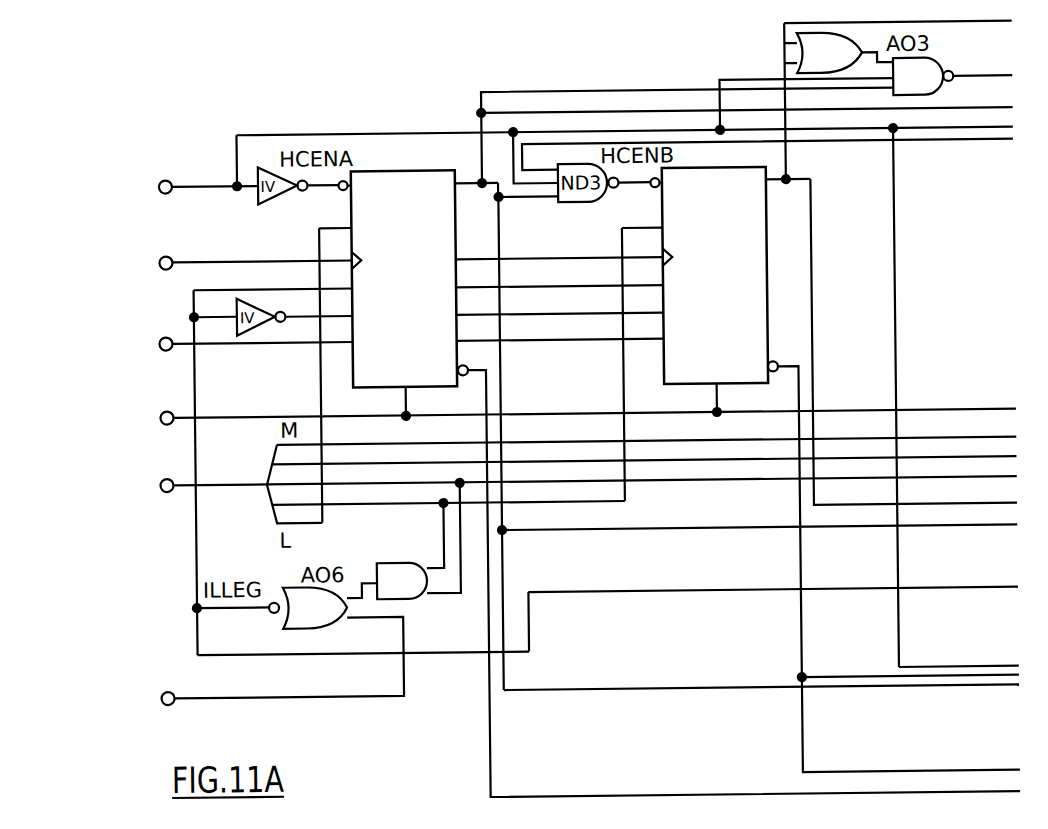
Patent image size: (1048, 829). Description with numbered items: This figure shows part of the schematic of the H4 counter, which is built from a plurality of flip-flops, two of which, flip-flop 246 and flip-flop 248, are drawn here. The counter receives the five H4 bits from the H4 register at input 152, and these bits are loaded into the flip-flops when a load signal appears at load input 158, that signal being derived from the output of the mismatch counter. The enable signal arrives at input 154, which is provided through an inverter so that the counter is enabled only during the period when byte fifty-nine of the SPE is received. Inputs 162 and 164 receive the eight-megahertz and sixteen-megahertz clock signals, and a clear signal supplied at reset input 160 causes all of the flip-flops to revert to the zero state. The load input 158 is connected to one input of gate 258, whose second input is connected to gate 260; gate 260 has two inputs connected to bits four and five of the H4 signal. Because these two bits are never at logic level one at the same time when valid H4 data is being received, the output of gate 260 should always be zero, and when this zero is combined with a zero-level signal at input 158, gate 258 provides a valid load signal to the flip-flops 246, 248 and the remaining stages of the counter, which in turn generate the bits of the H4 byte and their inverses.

The enable input 154 is at (167, 179).
The 16-MHz clock input 164 is at (167, 256).
The 8-MHz clock input 162 is at (167, 337).
The reset input 160 is at (167, 411).
The H4 bits input 152 is at (167, 492).
The load input 158 is at (166, 691).
The flip-flop 246 is at (372, 174).
The flip-flop 248 is at (722, 174).
The gate 258 is at (311, 630).
The gate 260 is at (410, 602).